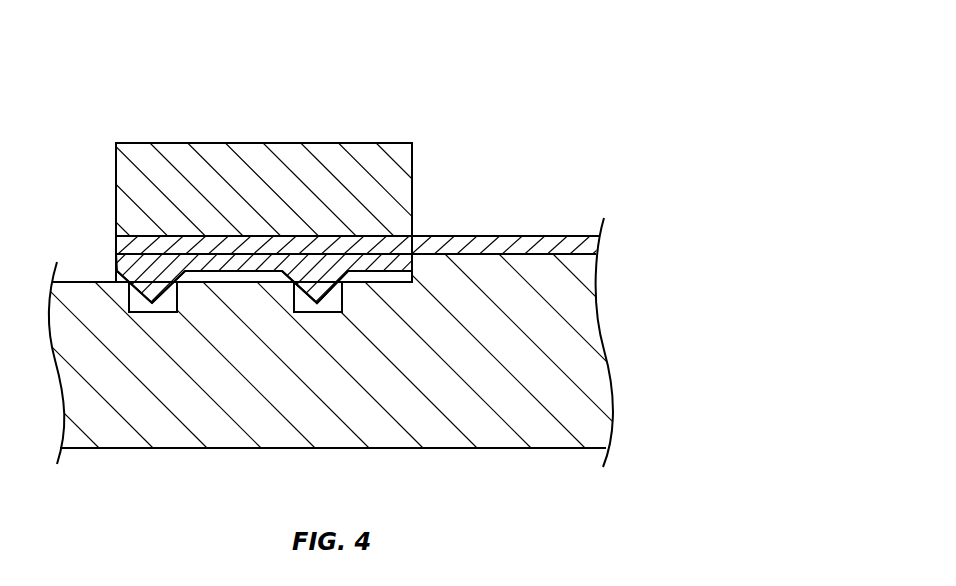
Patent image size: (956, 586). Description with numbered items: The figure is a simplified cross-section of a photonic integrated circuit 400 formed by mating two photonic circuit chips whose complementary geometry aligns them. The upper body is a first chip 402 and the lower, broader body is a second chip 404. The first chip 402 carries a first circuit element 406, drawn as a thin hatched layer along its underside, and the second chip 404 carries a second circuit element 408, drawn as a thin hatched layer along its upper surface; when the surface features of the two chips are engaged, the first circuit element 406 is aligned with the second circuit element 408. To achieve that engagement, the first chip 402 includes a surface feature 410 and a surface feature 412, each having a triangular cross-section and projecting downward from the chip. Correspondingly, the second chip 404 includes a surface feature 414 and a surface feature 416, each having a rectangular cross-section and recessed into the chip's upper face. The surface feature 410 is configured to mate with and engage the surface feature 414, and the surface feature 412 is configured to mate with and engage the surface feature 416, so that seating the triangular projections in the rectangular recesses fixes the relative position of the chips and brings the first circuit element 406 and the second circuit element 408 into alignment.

The photonic integrated circuit 400 is at (55, 86).
The first chip 402 is at (390, 131).
The second chip 404 is at (637, 347).
The first circuit element 406 is at (117, 238).
The second circuit element 408 is at (522, 236).
The surface feature 410 is at (173, 292).
The surface feature 412 is at (338, 292).
The surface feature 414 is at (135, 313).
The surface feature 416 is at (300, 313).